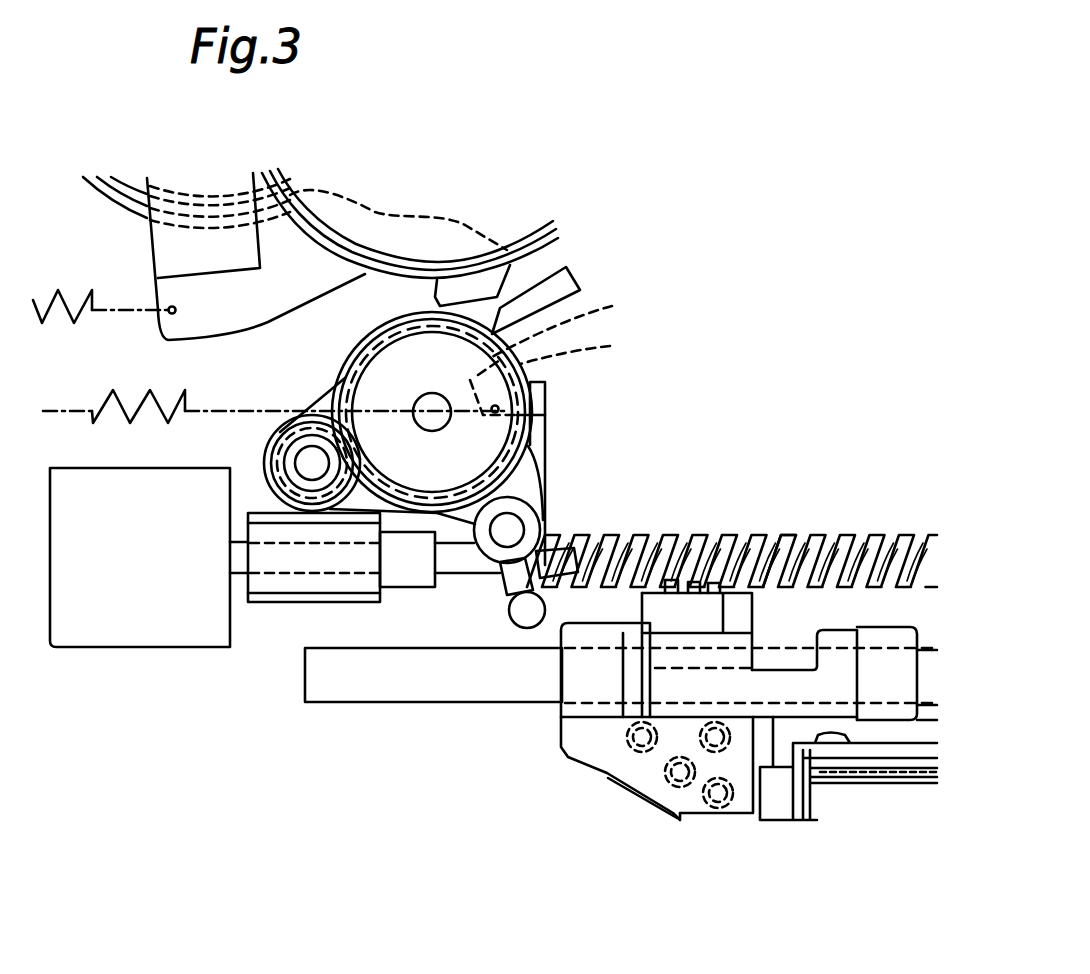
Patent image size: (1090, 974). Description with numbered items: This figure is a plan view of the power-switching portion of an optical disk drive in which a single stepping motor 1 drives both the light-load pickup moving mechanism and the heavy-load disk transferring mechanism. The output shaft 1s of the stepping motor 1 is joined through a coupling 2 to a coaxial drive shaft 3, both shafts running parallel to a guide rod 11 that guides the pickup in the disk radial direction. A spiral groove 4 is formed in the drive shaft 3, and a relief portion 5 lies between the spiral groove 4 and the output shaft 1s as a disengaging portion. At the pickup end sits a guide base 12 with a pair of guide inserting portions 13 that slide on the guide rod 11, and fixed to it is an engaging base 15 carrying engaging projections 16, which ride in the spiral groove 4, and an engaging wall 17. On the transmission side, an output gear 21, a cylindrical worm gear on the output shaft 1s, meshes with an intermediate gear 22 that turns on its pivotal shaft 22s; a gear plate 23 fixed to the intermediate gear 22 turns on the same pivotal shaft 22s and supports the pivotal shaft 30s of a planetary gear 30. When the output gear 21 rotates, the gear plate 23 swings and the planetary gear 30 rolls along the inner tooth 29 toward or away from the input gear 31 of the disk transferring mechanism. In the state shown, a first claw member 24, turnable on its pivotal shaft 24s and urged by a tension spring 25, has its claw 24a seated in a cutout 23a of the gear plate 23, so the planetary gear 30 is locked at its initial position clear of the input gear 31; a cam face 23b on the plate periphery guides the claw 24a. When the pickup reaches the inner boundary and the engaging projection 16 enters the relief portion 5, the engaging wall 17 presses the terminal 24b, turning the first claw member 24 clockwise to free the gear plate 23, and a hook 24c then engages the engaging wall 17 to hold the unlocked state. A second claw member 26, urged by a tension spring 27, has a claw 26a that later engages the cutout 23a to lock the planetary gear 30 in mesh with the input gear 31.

The stepping motor 1 is at (118, 650).
The output shaft 1s is at (238, 578).
The coupling 2 is at (400, 592).
The drive shaft 3 is at (852, 521).
The spiral groove 4 is at (772, 540).
The relief portion 5 is at (460, 580).
The guide rod 11 is at (387, 704).
The guide base 12 is at (563, 747).
The guide inserting portion 13 is at (560, 671).
The engaging base 15 is at (653, 780).
The engaging projection 16 is at (665, 590).
The engaging wall 17 is at (737, 597).
The output gear 21 is at (288, 603).
The intermediate gear 22 is at (278, 424).
The pivotal shaft 22s is at (308, 460).
The gear plate 23 is at (552, 432).
The cutout 23a is at (578, 323).
The cam face 23b is at (545, 460).
The first claw member 24 is at (558, 441).
The claw 24a is at (568, 372).
The terminal 24b is at (508, 612).
The hook 24c is at (560, 548).
The pivotal shaft 24s is at (510, 530).
The tension spring 25 is at (98, 425).
The second claw member 26 is at (155, 293).
The claw 26a is at (480, 305).
The tension spring 27 is at (60, 323).
The inner tooth 29 is at (572, 297).
The planetary gear 30 is at (404, 314).
The pivotal shaft 30s is at (430, 398).
The input gear 31 is at (548, 250).